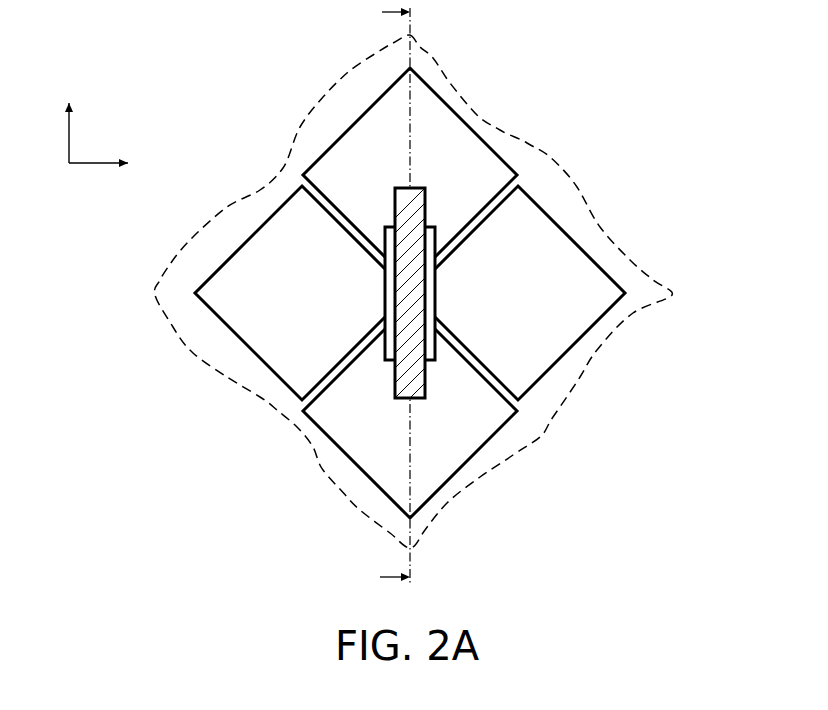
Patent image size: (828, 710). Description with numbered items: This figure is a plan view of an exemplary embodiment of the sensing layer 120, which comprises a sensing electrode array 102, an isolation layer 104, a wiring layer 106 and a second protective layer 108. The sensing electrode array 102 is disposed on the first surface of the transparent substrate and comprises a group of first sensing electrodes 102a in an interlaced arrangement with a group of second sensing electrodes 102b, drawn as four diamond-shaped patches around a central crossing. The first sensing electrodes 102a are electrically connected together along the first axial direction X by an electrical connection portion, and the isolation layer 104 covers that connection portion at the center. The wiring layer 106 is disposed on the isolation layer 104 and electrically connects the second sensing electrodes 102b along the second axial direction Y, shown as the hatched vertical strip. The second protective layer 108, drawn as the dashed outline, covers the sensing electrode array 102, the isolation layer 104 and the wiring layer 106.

The sensing electrode array 102 is at (404, 293).
The first sensing electrodes 102a is at (587, 287).
The second sensing electrodes 102b is at (463, 152).
The isolation layer 104 is at (428, 323).
The wiring layer 106 is at (425, 210).
The second protective layer 108 is at (450, 85).
The sensing layer 120 is at (383, 296).